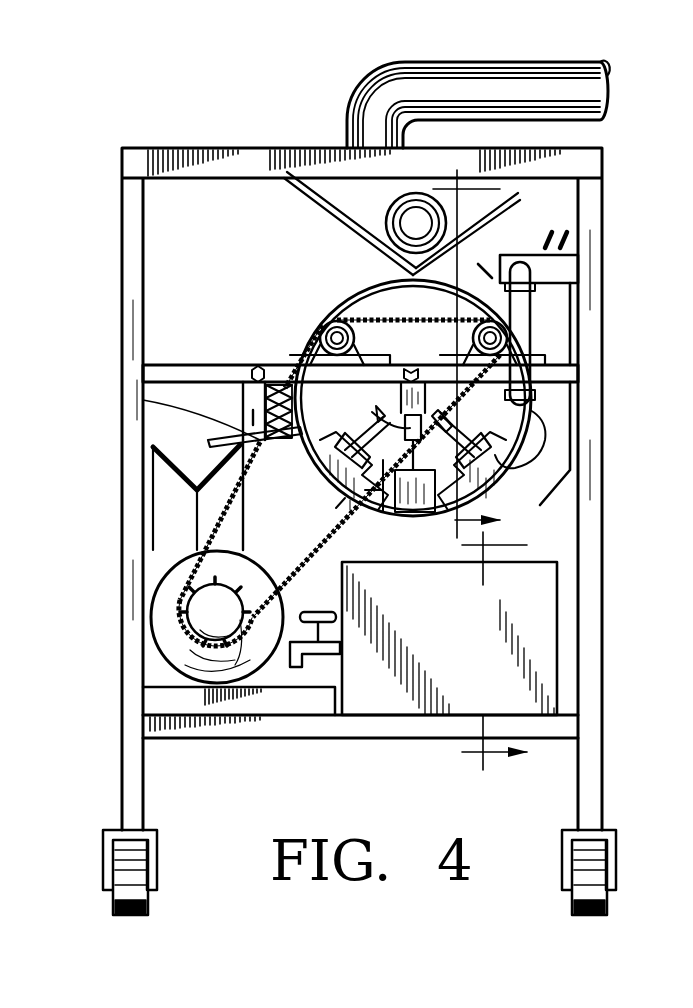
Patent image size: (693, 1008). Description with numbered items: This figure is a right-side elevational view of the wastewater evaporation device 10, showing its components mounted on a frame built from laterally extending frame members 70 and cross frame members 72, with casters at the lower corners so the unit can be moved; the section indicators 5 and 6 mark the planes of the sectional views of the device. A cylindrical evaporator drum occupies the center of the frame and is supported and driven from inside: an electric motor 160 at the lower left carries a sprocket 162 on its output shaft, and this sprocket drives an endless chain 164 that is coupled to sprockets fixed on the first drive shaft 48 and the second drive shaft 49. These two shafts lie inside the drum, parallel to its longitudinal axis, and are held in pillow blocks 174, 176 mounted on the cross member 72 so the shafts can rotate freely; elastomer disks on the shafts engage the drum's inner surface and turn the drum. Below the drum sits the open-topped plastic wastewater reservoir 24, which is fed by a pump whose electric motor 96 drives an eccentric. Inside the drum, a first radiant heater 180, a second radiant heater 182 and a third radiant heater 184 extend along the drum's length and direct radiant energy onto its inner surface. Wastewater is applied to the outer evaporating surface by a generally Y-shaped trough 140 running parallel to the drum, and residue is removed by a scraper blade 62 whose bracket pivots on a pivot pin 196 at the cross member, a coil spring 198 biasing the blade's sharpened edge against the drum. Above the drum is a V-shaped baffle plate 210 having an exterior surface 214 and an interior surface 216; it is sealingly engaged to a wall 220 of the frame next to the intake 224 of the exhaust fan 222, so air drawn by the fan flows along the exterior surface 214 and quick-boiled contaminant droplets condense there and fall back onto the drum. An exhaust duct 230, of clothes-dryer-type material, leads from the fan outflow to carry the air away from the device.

The device 10 is at (290, 110).
The wastewater reservoir 24 is at (525, 600).
The first drive shaft 48 is at (318, 323).
The second drive shaft 49 is at (453, 303).
The scraper blade 62 is at (238, 432).
The laterally extending frame member 70 is at (122, 256).
The cross frame member 72 is at (198, 375).
The electric motor 96 is at (360, 725).
The trough 140 is at (548, 233).
The electric motor 160 is at (170, 620).
The sprocket 162 is at (230, 580).
The endless chain 164 is at (228, 514).
The pillow block 174 is at (300, 333).
The pillow block 176 is at (462, 350).
The first radiant heater 180 is at (327, 485).
The second radiant heater 182 is at (388, 503).
The third radiant heater 184 is at (500, 438).
The pivot pin 196 is at (262, 362).
The coil spring 198 is at (293, 360).
The V-shaped baffle plate 210 is at (317, 200).
The exterior surface 214 is at (322, 212).
The interior surface 216 is at (373, 240).
The wall 220 is at (218, 214).
The exhaust fan 222 is at (450, 215).
The intake 224 is at (413, 222).
The exhaust duct 230 is at (455, 82).
The section line 6 is at (476, 354).
The section line 5 is at (504, 650).